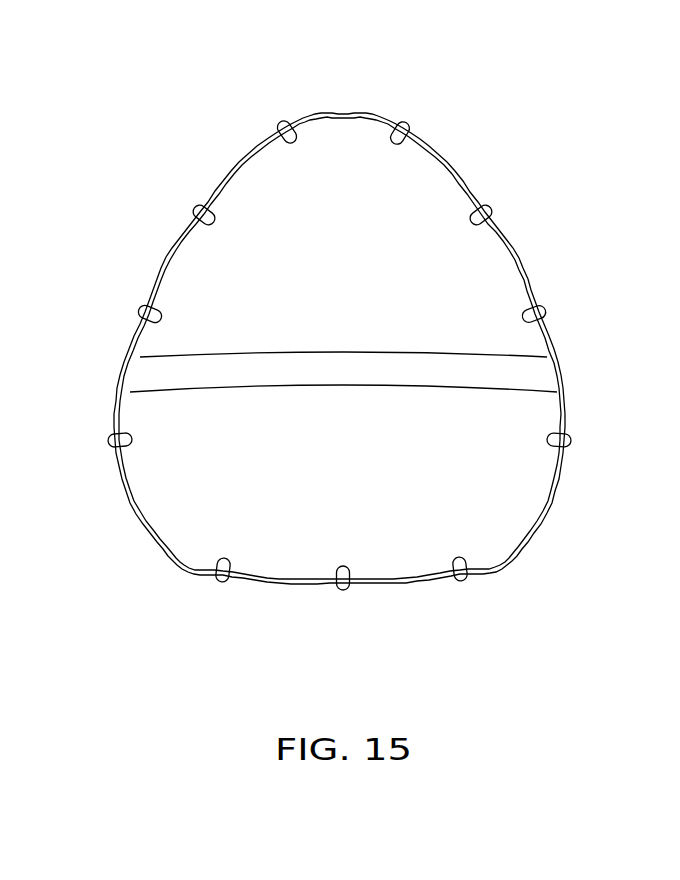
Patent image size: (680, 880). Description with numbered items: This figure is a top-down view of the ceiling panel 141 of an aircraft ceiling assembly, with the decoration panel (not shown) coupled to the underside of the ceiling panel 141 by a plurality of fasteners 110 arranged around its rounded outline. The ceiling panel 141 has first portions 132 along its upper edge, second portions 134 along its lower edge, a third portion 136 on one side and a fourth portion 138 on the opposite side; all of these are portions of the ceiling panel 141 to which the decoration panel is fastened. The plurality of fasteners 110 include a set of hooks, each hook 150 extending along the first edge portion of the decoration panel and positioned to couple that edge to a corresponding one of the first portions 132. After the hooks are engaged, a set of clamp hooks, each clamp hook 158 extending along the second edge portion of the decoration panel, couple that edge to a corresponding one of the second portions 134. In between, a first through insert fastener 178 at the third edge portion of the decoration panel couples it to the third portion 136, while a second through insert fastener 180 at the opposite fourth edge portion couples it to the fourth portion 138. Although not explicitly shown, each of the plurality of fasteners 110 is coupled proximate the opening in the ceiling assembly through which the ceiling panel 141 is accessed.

The plurality of fasteners 110 is at (143, 113).
The first portions 132 is at (267, 120).
The second portions 134 is at (105, 430).
The third portion 136 is at (135, 310).
The fourth portion 138 is at (558, 303).
The ceiling panel 141 is at (548, 372).
The hook 150 is at (287, 125).
The clamp hook 158 is at (112, 428).
The first through insert fastener 178 is at (145, 310).
The second through insert fastener 180 is at (538, 312).